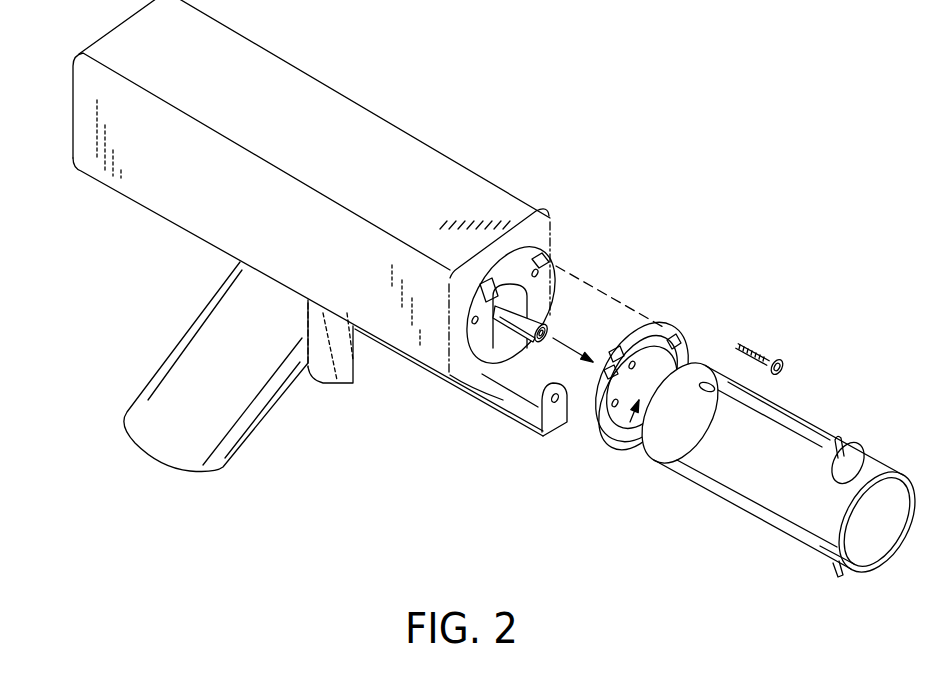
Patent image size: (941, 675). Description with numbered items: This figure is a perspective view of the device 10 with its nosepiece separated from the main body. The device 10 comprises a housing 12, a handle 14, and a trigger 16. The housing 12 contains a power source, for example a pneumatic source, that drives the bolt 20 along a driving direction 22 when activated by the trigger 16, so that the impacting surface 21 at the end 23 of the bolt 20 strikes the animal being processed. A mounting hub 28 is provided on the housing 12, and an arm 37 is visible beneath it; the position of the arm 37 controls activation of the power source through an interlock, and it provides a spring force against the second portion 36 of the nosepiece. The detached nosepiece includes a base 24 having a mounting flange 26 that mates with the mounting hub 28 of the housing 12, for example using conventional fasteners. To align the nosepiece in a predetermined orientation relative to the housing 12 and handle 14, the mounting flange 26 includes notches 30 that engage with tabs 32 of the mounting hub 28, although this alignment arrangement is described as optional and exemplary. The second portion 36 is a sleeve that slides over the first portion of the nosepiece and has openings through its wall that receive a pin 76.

The device 10 is at (513, 80).
The housing 12 is at (288, 90).
The handle 14 is at (182, 382).
The trigger 16 is at (327, 387).
The bolt 20 is at (527, 315).
The impacting surface 21 is at (553, 326).
The driving direction 22 is at (832, 497).
The end of bolt 23 is at (520, 340).
The base 24 is at (634, 414).
The mounting flange 26 is at (632, 441).
The mounting hub 28 is at (510, 244).
The notches 30 is at (674, 340).
The tabs 32 is at (541, 258).
The second portion 36 is at (797, 510).
The arm 37 is at (520, 413).
The pin 76 is at (844, 441).